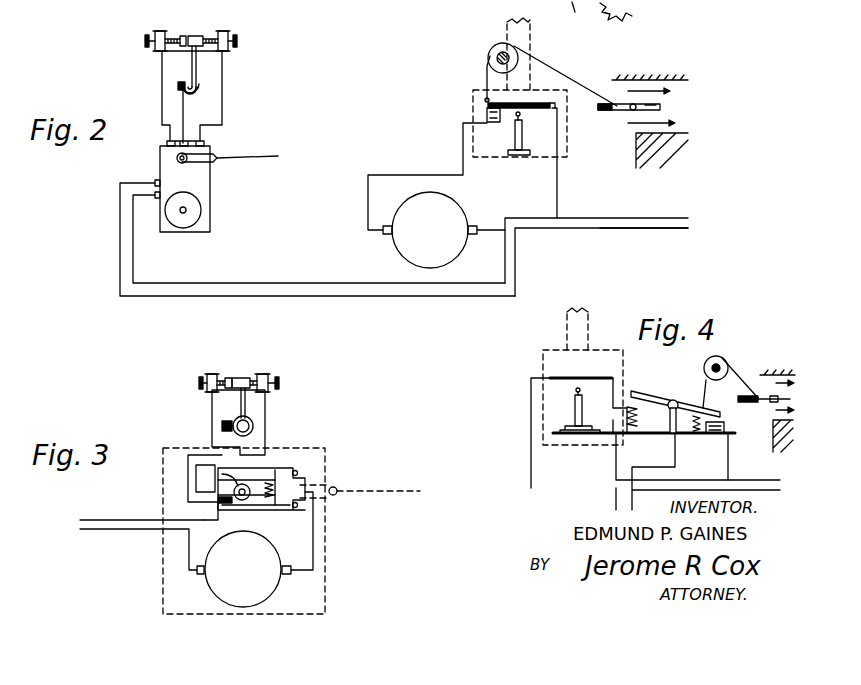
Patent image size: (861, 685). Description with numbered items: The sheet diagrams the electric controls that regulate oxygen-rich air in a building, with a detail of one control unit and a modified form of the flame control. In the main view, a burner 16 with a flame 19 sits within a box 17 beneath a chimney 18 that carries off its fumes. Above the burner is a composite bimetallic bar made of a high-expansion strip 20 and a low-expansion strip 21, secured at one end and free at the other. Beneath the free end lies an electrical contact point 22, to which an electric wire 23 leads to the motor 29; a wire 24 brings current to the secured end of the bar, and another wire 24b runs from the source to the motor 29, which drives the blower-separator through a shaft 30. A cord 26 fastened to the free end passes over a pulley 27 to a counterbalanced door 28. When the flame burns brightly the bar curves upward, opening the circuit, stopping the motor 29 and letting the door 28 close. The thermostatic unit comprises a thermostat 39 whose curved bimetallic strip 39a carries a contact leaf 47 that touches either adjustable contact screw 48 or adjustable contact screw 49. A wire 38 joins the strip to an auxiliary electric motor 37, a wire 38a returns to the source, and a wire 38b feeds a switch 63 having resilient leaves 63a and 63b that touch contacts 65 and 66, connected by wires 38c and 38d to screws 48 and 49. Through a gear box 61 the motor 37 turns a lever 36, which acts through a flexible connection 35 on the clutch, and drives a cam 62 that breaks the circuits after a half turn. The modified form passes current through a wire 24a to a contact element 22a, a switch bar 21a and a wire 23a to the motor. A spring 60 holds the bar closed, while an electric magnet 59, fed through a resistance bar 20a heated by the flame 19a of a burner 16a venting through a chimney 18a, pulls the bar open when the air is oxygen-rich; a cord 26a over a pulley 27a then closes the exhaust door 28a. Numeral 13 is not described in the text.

In FIG. 2, the conduit 13 is at (586, 16).
In FIG. 2, the burner 16 is at (512, 150).
In FIG. 2, the box 17 is at (568, 140).
In FIG. 2, the chimney 18 is at (530, 52).
In FIG. 2, the flame 19 is at (516, 117).
In FIG. 2, the strip 20 is at (560, 125).
In FIG. 2, the strip 21 is at (536, 104).
In FIG. 2, the electrical contact point 22 is at (488, 112).
In FIG. 2, the electric wire 23 is at (463, 143).
In FIG. 2, the electric wire 24 is at (557, 196).
In FIG. 2, the wire 24b is at (620, 228).
In FIG. 2, the cord 26 is at (487, 75).
In FIG. 2, the pulley 27 is at (490, 50).
In FIG. 2, the door 28 is at (660, 103).
In FIG. 2, the electric motor 29 is at (455, 240).
In FIG. 2, the shaft 30 is at (592, 10).
In FIG. 2, the flexible connection 35 is at (266, 156).
In FIG. 3, the flexible connection 35 is at (388, 490).
In FIG. 2, the lever 36 is at (206, 160).
In FIG. 3, the lever 36 is at (337, 486).
In FIG. 3, the auxiliary electric motor 37 is at (273, 583).
In FIG. 2, the electric wire 38 is at (186, 109).
In FIG. 3, the electric wire 38 is at (282, 440).
In FIG. 2, the electric wire 38a is at (233, 283).
In FIG. 3, the electric wire 38a is at (127, 530).
In FIG. 2, the wire 38b is at (120, 272).
In FIG. 3, the wire 38b is at (122, 520).
In FIG. 2, the electric wire 38c is at (162, 73).
In FIG. 3, the electric wire 38c is at (188, 478).
In FIG. 2, the electric wire 38d is at (222, 80).
In FIG. 3, the electric wire 38d is at (266, 396).
In FIG. 2, the thermostat 39 is at (137, 54).
In FIG. 3, the thermostat 39 is at (195, 406).
In FIG. 2, the bimetallic strip 39a is at (182, 90).
In FIG. 3, the bimetallic strip 39a is at (254, 424).
In FIG. 2, the contact leaf 47 is at (198, 36).
In FIG. 3, the contact leaf 47 is at (244, 376).
In FIG. 2, the adjustable contact screw 48 is at (146, 38).
In FIG. 3, the adjustable contact screw 48 is at (206, 376).
In FIG. 2, the adjustable contact screw 49 is at (238, 40).
In FIG. 3, the adjustable contact screw 49 is at (280, 380).
In FIG. 4, the electric magnet 59 is at (640, 416).
In FIG. 4, the spring 60 is at (695, 432).
In FIG. 2, the gear box 61 is at (163, 167).
In FIG. 3, the gear box 61 is at (325, 580).
In FIG. 3, the cam 62 is at (244, 483).
In FIG. 3, the switch 63 is at (309, 472).
In FIG. 3, the leaf 63a is at (265, 510).
In FIG. 3, the leaf 63b is at (273, 470).
In FIG. 3, the electric contact 65 is at (226, 506).
In FIG. 3, the electric contact 66 is at (220, 473).
In FIG. 4, the burner 16a is at (568, 418).
In FIG. 4, the chimney 18a is at (567, 337).
In FIG. 4, the flame 19a is at (574, 392).
In FIG. 4, the resistance bar 20a is at (600, 378).
In FIG. 4, the switch bar 21a is at (645, 404).
In FIG. 4, the contact element 22a is at (726, 428).
In FIG. 4, the electric wire 23a is at (666, 463).
In FIG. 4, the electric wire 24a is at (728, 472).
In FIG. 4, the cord 26a is at (746, 386).
In FIG. 4, the pulley 27a is at (719, 357).
In FIG. 4, the exhaust door 28a is at (738, 402).